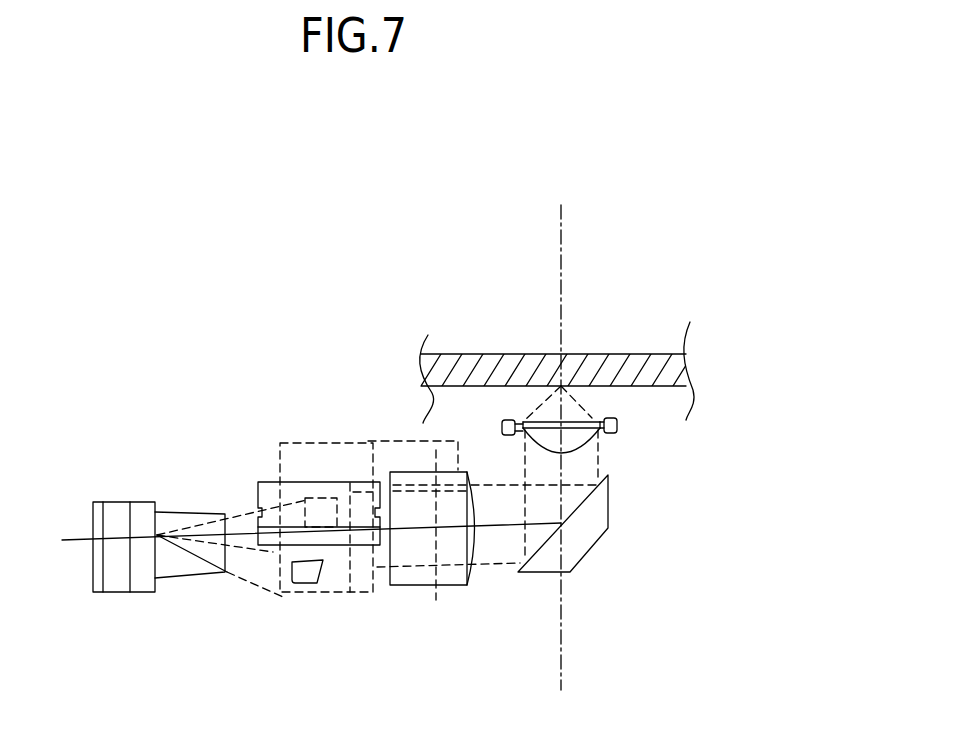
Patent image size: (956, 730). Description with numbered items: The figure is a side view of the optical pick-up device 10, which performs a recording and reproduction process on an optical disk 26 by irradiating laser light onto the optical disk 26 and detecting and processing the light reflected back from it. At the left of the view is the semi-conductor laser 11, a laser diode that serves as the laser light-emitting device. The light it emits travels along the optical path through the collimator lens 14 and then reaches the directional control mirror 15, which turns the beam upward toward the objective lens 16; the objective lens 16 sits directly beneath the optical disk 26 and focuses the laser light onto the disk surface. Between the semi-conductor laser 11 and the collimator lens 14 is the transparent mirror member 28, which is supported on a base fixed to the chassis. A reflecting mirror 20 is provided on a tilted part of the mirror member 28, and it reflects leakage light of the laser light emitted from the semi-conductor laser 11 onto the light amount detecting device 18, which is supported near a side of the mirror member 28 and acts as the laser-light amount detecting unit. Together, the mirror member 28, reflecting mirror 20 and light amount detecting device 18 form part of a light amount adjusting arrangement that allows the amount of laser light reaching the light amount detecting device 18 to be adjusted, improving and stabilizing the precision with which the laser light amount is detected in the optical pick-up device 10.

The optical pick-up device 10 is at (345, 253).
The semi-conductor laser 11 is at (115, 510).
The collimator lens 14 is at (452, 557).
The directional control mirror 15 is at (597, 528).
The objective lens 16 is at (618, 430).
The light amount detecting device 18 is at (293, 490).
The reflecting mirror 20 is at (297, 583).
The optical disk 26 is at (478, 354).
The transparent mirror member 28 is at (327, 457).